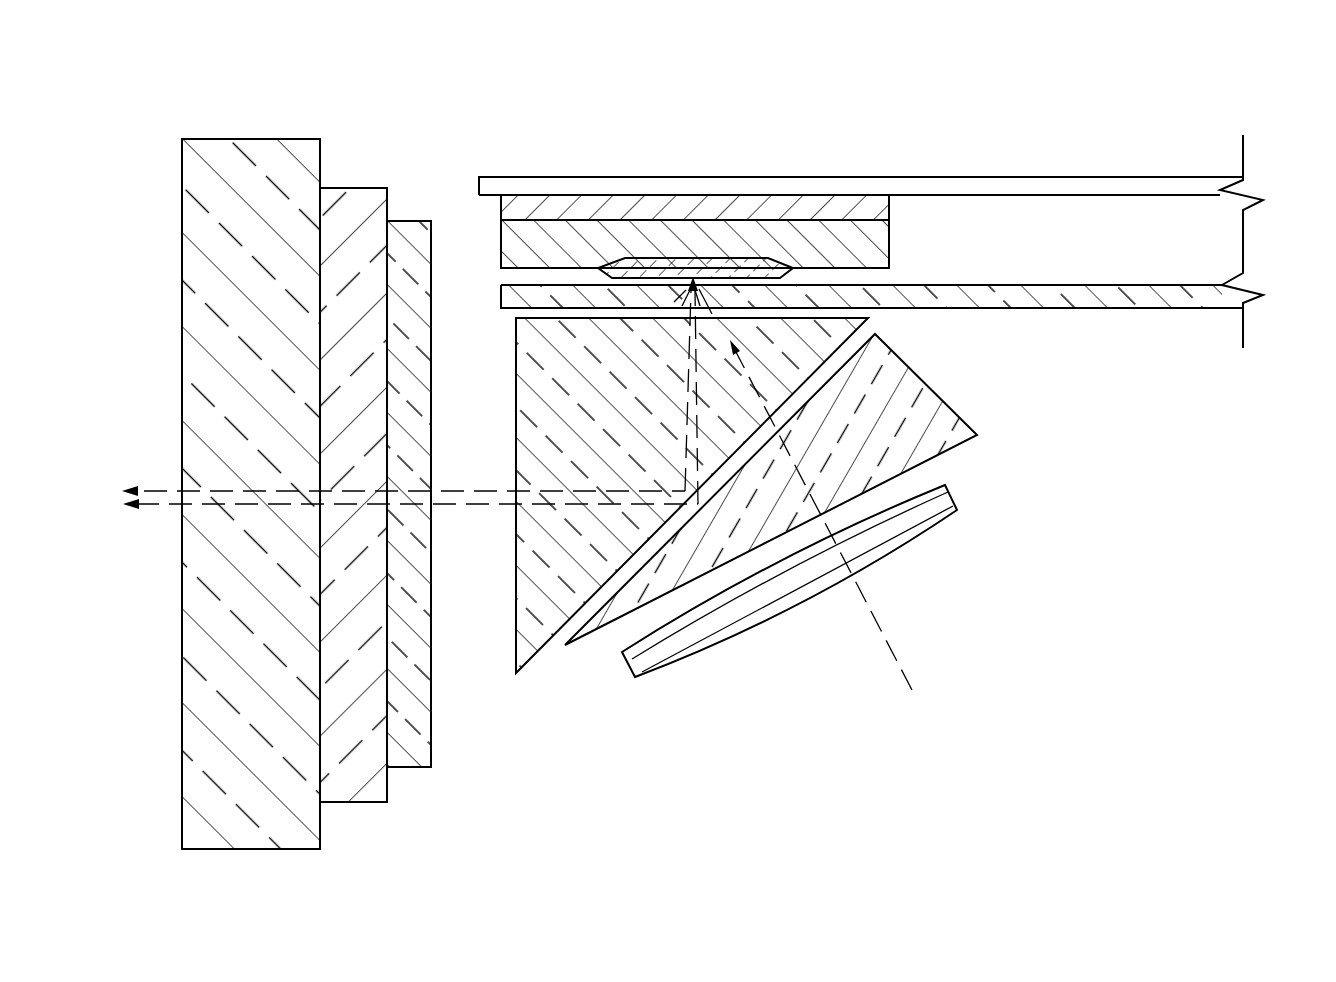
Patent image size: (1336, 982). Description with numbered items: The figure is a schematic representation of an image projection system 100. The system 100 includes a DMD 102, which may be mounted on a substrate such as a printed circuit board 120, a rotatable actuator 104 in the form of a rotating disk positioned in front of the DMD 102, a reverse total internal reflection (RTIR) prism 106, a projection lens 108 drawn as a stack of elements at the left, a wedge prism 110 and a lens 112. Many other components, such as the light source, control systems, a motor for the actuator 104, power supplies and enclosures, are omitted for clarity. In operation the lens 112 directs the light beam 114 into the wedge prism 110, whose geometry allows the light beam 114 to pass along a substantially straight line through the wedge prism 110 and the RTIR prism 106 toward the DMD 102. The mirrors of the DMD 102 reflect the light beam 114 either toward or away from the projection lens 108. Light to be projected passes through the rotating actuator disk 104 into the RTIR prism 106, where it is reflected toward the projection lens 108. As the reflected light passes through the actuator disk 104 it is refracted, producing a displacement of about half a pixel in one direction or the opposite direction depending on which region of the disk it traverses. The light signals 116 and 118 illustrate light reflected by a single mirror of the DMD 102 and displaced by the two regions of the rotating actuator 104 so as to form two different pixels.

The image projection system 100 is at (443, 93).
The DMD 102 is at (888, 235).
The rotatable actuator 104 is at (1068, 290).
The reverse total internal reflection prism 106 is at (523, 612).
The projection lens 108 is at (190, 312).
The wedge prism 110 is at (932, 395).
The lens 112 is at (910, 548).
The light beam 114 is at (880, 630).
The light signal 116 is at (483, 491).
The light signal 118 is at (483, 504).
The printed circuit board 120 is at (1008, 175).